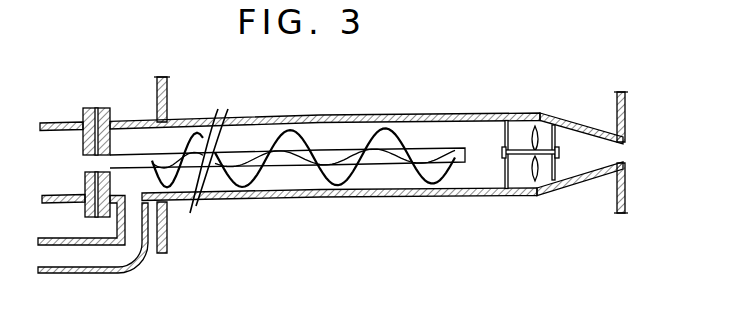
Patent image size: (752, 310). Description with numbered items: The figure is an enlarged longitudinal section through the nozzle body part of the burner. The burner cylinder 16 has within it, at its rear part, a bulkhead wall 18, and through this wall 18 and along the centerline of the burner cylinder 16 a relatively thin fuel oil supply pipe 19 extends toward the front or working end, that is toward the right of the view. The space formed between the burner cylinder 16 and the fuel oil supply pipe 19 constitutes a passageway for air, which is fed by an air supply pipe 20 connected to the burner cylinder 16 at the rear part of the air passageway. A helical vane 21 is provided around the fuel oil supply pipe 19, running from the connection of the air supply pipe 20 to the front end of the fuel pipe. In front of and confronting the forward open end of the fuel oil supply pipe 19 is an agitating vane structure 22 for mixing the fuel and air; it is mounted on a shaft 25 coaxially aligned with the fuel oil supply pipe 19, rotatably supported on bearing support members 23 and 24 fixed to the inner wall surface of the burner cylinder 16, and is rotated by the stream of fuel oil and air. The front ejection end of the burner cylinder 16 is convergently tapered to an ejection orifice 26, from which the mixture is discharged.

The burner cylinder 16 is at (385, 198).
The bulkhead wall 18 is at (113, 148).
The fuel oil supply pipe 19 is at (250, 157).
The air supply pipe 20 is at (83, 260).
The helical vane 21 is at (313, 140).
The agitating vane structure 22 is at (532, 133).
The bearing support member 23 is at (505, 170).
The bearing support member 24 is at (548, 138).
The shaft 25 is at (522, 157).
The ejection orifice 26 is at (618, 152).